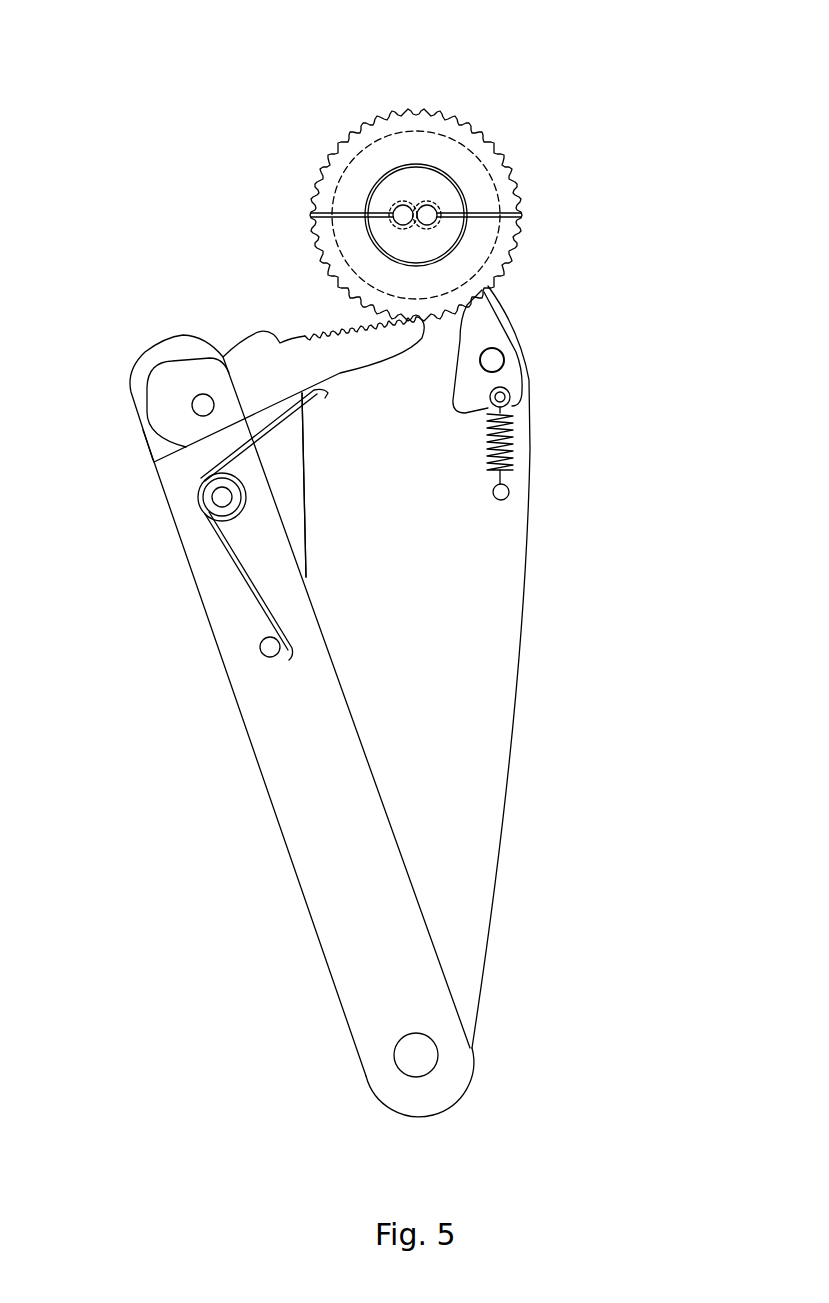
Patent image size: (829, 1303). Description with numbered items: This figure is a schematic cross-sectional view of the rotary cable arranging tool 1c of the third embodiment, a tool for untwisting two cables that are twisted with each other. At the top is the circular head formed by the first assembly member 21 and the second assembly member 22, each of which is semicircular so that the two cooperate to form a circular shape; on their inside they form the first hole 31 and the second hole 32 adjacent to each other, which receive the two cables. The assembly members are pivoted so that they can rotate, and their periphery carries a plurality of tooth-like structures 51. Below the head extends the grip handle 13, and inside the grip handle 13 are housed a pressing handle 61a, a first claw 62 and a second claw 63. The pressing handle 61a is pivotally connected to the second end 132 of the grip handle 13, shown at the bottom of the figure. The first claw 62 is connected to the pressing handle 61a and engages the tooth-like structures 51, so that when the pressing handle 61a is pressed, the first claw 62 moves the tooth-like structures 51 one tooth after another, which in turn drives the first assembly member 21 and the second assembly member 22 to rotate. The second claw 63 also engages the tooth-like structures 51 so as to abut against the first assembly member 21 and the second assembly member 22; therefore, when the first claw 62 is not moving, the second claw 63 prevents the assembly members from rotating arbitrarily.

The rotary cable arranging tool 1c is at (687, 96).
The first assembly member 21 is at (318, 180).
The second assembly member 22 is at (318, 228).
The first hole 31 is at (401, 202).
The second hole 32 is at (429, 202).
The tooth-like structures 51 is at (505, 271).
The pressing handle 61a is at (152, 462).
The first claw 62 is at (313, 334).
The second claw 63 is at (506, 302).
The grip handle 13 is at (515, 733).
The second end 132 is at (487, 1078).